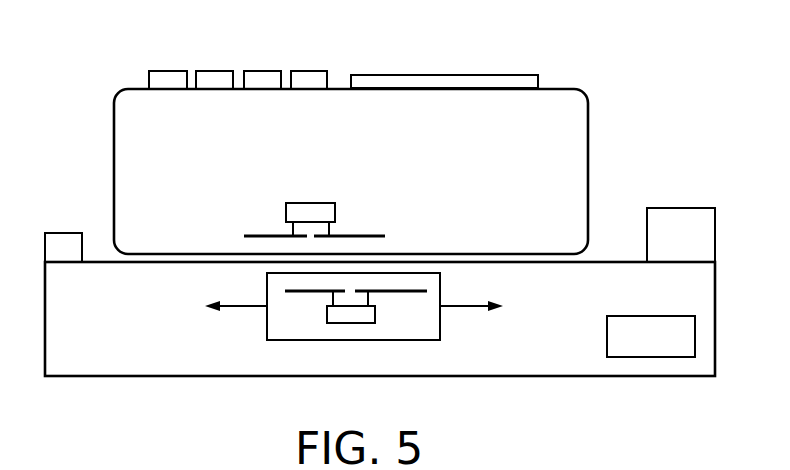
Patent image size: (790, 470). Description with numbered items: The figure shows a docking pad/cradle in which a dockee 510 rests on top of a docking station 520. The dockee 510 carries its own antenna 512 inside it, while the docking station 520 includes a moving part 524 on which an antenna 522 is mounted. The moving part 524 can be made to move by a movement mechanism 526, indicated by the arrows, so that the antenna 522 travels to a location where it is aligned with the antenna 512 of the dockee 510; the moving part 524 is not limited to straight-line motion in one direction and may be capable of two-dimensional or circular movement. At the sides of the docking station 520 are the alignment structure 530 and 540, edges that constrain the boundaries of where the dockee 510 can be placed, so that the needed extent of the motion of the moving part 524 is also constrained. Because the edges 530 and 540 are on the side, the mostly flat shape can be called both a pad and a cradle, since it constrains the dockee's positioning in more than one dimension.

The dockee 510 is at (575, 88).
The antenna 512 is at (264, 232).
The docking station 520 is at (58, 378).
The antenna 522 is at (320, 292).
The moving part 524 is at (440, 330).
The movement mechanism 526 is at (652, 315).
The alignment structure 530 is at (66, 232).
The alignment structure 540 is at (686, 207).